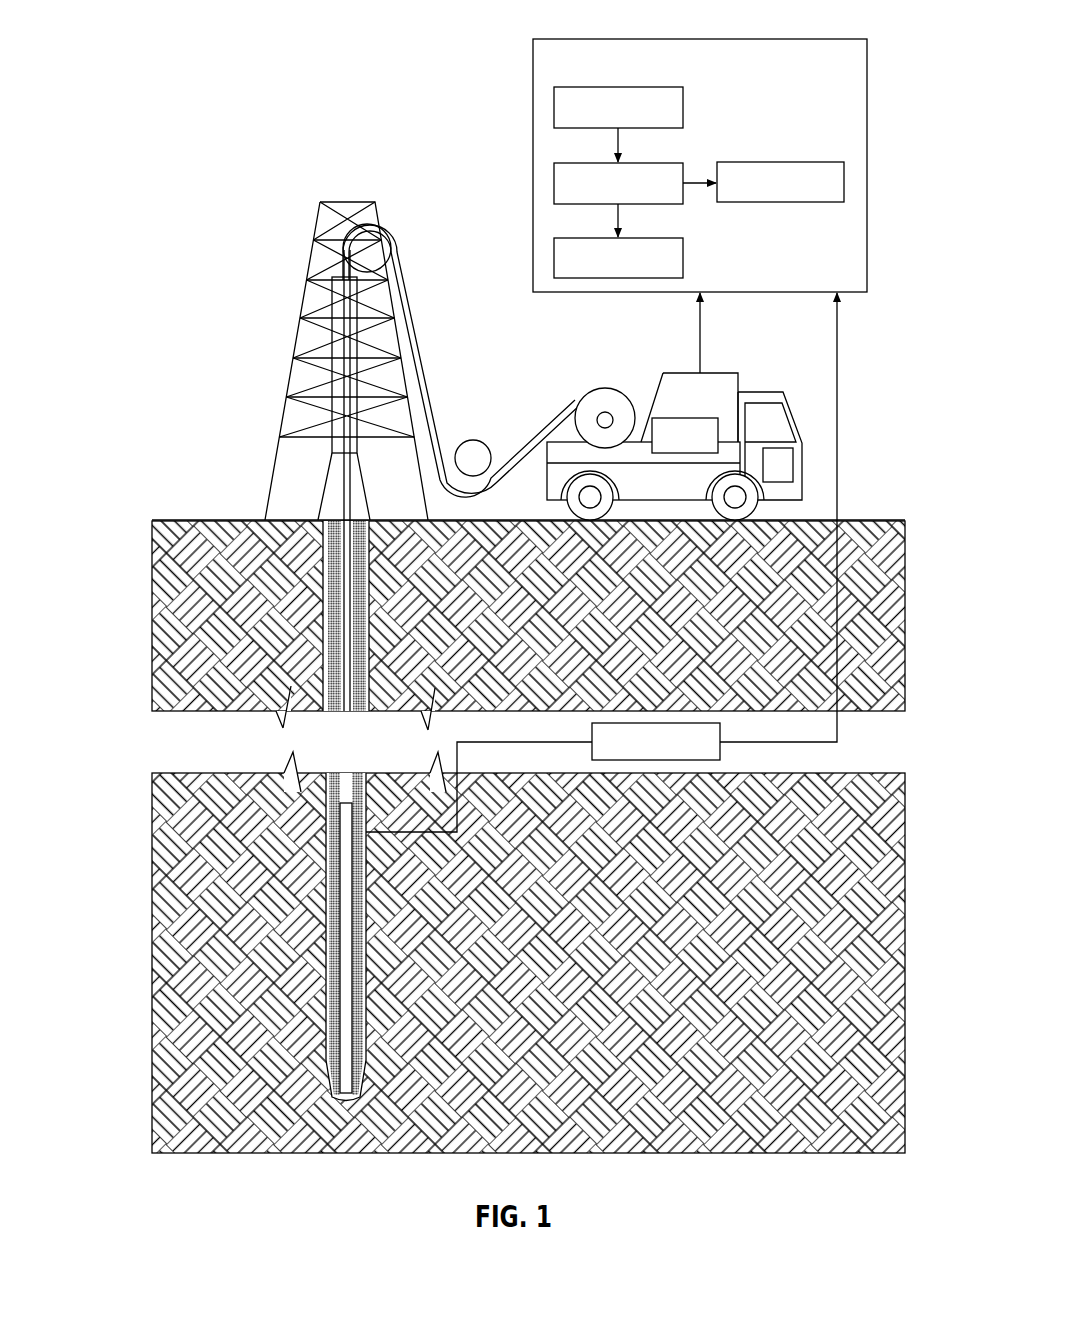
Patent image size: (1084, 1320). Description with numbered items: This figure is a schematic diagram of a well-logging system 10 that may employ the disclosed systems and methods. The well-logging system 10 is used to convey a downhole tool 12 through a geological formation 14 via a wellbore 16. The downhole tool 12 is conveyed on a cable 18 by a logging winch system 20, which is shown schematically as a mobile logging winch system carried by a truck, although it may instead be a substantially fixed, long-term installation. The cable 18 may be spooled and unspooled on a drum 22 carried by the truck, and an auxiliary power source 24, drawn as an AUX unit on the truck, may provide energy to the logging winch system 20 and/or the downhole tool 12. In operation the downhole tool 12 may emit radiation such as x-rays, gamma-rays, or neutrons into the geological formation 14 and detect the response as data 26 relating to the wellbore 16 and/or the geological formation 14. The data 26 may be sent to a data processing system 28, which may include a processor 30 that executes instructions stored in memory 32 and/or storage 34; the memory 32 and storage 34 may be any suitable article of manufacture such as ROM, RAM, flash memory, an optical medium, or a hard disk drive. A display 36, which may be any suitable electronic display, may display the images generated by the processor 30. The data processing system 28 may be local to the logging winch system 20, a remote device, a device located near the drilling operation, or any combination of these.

The well-logging system 10 is at (240, 205).
The downhole tool 12 is at (350, 840).
The geological formation 14 is at (156, 906).
The wellbore 16 is at (322, 538).
The cable 18 is at (430, 308).
The logging winch system 20 is at (674, 410).
The drum 22 is at (607, 388).
The auxiliary power source 24 is at (682, 418).
The data 26 is at (700, 325).
The data processing system 28 is at (674, 149).
The processor 30 is at (554, 183).
The memory 32 is at (554, 108).
The storage 34 is at (554, 258).
The display 36 is at (793, 162).